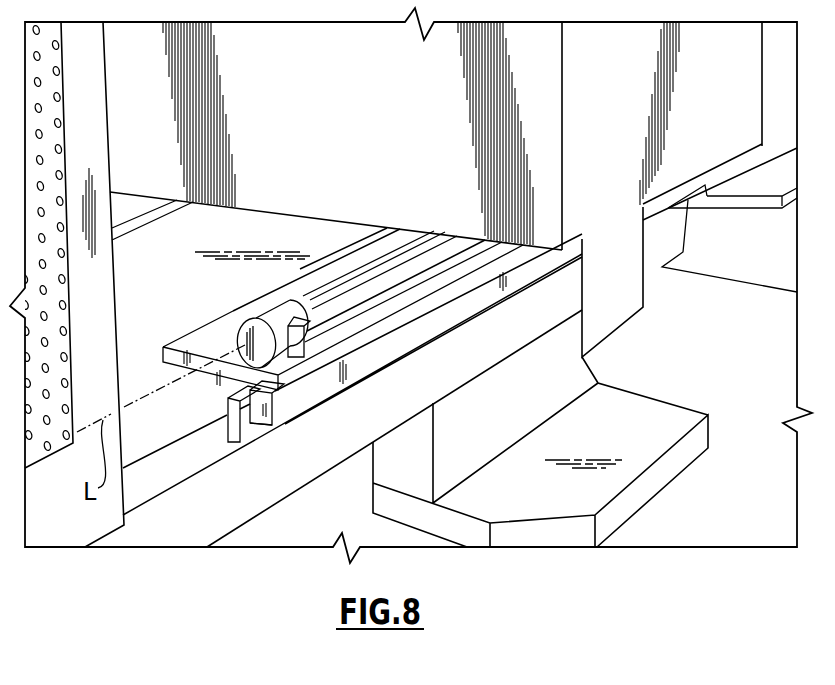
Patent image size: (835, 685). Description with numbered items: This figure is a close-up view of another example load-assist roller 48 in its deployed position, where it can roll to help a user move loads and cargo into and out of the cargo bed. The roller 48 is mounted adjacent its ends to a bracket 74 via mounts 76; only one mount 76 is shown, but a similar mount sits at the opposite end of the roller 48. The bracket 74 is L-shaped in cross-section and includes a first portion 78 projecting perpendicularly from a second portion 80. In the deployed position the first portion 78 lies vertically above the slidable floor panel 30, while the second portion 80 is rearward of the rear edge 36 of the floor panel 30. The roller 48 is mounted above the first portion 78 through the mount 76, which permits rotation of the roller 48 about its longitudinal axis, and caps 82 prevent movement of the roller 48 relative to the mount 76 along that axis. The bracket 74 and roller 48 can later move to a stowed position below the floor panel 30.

The floor panel 30 is at (333, 376).
The rear edge 36 is at (246, 432).
The roller 48 is at (405, 277).
The bracket 74 is at (264, 438).
The mount 76 is at (300, 350).
The first portion 78 is at (230, 370).
The second portion 80 is at (229, 428).
The cap 82 is at (240, 322).